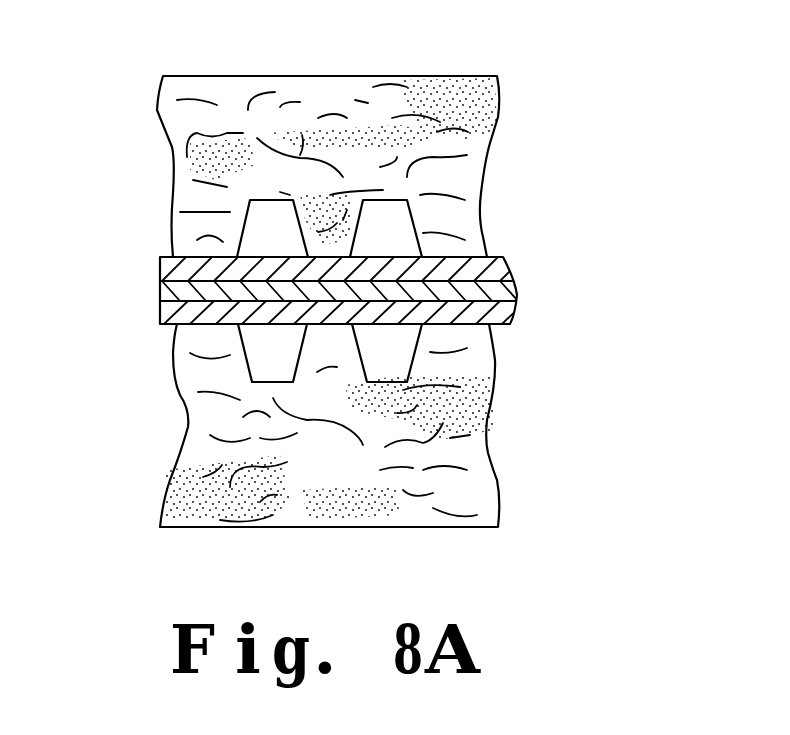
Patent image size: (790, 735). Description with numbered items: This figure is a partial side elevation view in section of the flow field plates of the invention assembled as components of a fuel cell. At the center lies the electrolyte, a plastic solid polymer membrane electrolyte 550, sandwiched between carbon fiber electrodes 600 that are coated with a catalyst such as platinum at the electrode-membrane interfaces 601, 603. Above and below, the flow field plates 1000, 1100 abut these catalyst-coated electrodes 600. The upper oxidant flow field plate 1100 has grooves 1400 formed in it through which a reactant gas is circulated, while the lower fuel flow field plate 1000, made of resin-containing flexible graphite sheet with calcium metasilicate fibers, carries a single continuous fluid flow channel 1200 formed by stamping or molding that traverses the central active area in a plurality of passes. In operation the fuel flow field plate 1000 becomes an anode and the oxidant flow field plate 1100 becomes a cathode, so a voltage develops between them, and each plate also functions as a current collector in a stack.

The oxidant flow field plate 1100 is at (345, 75).
The grooves 1400 is at (253, 240).
The carbon fiber electrodes 600 is at (352, 297).
The electrode-membrane interface 601 is at (160, 281).
The solid polymer membrane electrolyte 550 is at (517, 293).
The electrode-membrane interface 603 is at (160, 303).
The fluid flow channel 1200 is at (262, 357).
The fuel flow field plate 1000 is at (287, 528).